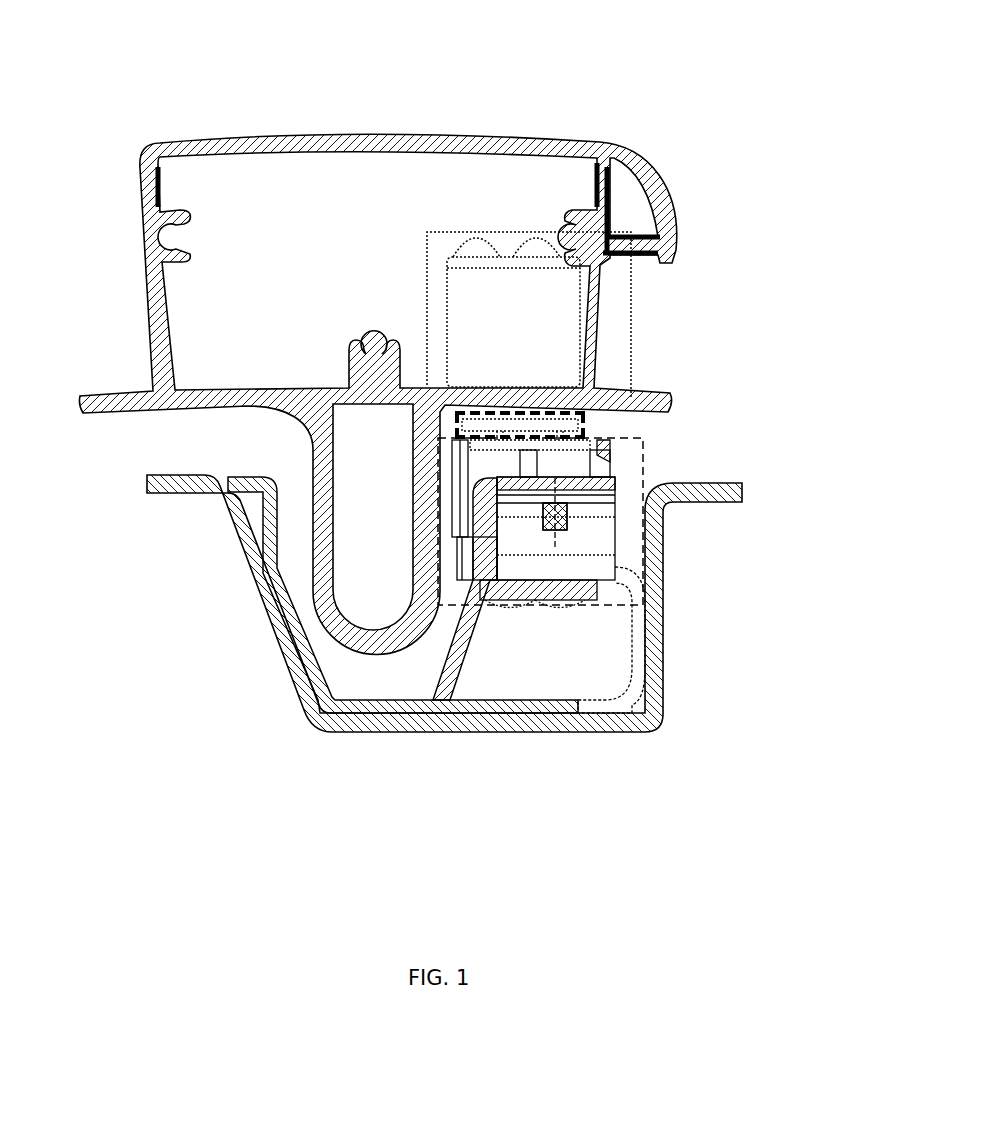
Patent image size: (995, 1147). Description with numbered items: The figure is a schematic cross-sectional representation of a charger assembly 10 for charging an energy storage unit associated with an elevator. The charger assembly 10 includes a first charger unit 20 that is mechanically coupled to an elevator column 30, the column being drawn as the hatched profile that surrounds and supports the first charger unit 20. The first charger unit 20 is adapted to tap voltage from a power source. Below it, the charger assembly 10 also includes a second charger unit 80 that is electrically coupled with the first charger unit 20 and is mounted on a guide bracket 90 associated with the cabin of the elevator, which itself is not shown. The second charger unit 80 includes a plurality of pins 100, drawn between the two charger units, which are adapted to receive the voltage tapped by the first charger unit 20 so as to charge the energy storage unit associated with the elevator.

The charger assembly 10 is at (560, 90).
The first charger unit 20 is at (632, 342).
The elevator column 30 is at (333, 142).
The second charger unit 80 is at (647, 473).
The guide bracket 90 is at (437, 692).
The plurality of pins 100 is at (590, 432).